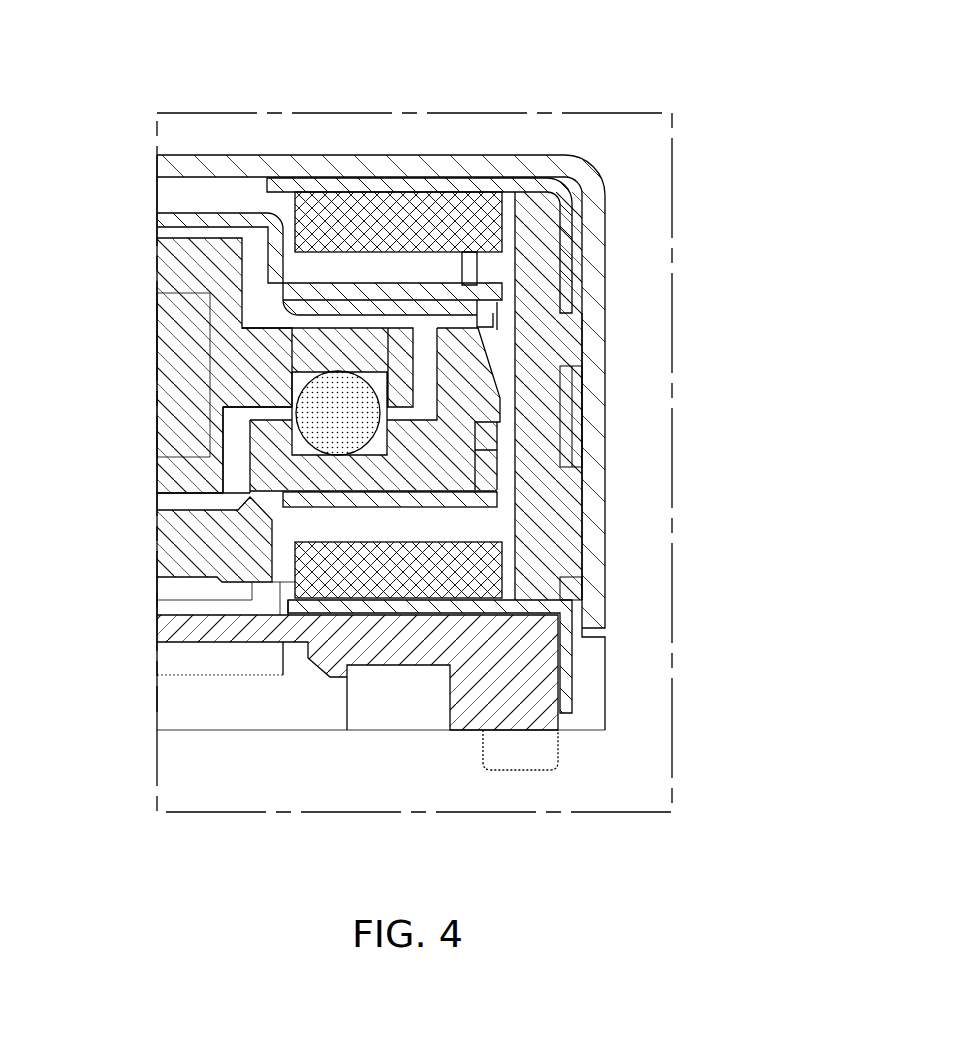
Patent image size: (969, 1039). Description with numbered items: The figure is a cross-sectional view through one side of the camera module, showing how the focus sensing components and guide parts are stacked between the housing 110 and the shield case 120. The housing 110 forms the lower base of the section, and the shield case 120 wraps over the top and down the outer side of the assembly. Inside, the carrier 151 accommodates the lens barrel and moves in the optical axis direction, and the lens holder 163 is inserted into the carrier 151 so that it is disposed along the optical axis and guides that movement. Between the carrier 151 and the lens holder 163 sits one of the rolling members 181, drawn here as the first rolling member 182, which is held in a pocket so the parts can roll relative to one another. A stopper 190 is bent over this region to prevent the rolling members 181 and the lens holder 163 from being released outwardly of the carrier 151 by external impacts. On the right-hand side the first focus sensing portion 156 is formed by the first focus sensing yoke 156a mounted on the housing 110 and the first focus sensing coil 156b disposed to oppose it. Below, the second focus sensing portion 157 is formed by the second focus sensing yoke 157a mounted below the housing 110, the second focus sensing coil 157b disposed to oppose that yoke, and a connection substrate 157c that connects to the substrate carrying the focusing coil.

The housing 110 is at (402, 642).
The shield case 120 is at (462, 158).
The carrier 151 is at (160, 545).
The first focus sensing portion 156 is at (550, 249).
The first focus sensing yoke 156a is at (596, 294).
The first focus sensing coil 156b is at (478, 222).
The second focus sensing portion 157 is at (573, 494).
The second focus sensing yoke 157a is at (497, 497).
The second focus sensing coil 157b is at (503, 557).
The connection substrate 157c is at (510, 603).
The lens holder 163 is at (207, 262).
The rolling members 181 is at (204, 413).
The first rolling member 182 is at (318, 388).
The stopper 190 is at (247, 213).